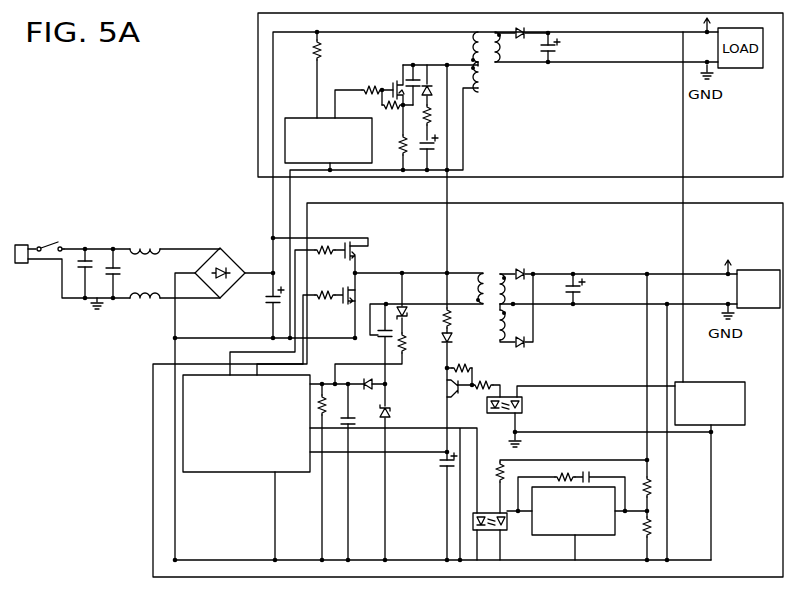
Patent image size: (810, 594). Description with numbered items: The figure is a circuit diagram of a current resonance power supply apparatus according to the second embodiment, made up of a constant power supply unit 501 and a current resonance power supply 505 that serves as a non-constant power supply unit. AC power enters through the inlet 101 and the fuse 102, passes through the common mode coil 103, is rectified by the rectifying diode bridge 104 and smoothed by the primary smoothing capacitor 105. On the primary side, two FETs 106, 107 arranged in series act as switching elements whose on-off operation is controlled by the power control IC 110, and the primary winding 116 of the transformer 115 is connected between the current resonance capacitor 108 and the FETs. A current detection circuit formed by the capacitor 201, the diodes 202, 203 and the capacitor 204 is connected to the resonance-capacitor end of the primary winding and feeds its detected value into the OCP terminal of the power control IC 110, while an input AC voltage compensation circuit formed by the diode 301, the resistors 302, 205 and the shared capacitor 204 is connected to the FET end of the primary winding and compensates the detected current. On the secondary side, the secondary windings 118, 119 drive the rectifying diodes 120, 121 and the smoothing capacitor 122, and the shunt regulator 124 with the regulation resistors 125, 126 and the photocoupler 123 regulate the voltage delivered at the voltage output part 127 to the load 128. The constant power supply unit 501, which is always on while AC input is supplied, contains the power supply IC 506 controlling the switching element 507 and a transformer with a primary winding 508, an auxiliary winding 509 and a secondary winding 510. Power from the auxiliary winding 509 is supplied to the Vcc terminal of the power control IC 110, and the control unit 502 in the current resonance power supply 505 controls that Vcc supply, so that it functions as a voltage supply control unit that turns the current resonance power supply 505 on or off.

The inlet 101 is at (20, 245).
The fuse 102 is at (45, 247).
The common mode coil 103 is at (140, 248).
The rectifying diode bridge 104 is at (232, 259).
The primary smoothing capacitor 105 is at (268, 303).
The FET (switching element) 106 is at (360, 253).
The FET (switching element) 107 is at (342, 296).
The current resonance capacitor 108 is at (365, 328).
The power control IC 110 is at (183, 428).
The transformer 115 is at (483, 273).
The primary winding 116 is at (478, 302).
The secondary winding 118 is at (503, 276).
The secondary winding 119 is at (503, 343).
The rectifying diode 120 is at (520, 270).
The rectifying diode 121 is at (527, 341).
The smoothing capacitor 122 is at (570, 292).
The photocoupler 123 is at (473, 521).
The shunt regulator 124 is at (548, 535).
The regulation resistor 125 is at (652, 488).
The regulation resistor 126 is at (652, 527).
The voltage output part 127 is at (728, 263).
The load 128 is at (762, 308).
The capacitor 201 is at (385, 342).
The diode 202 is at (372, 381).
The diode 203 is at (388, 421).
The capacitor 204 is at (355, 431).
The resistor 205 is at (330, 401).
The diode 301 is at (406, 311).
The resistor 302 is at (410, 330).
The constant power supply unit 501 is at (505, 177).
The control unit 502 is at (716, 425).
The current resonance power supply 505 is at (720, 203).
The power supply IC 506 is at (285, 140).
The switching element 507 is at (393, 82).
The primary winding 508 is at (473, 47).
The auxiliary winding 509 is at (468, 86).
The secondary winding 510 is at (503, 58).